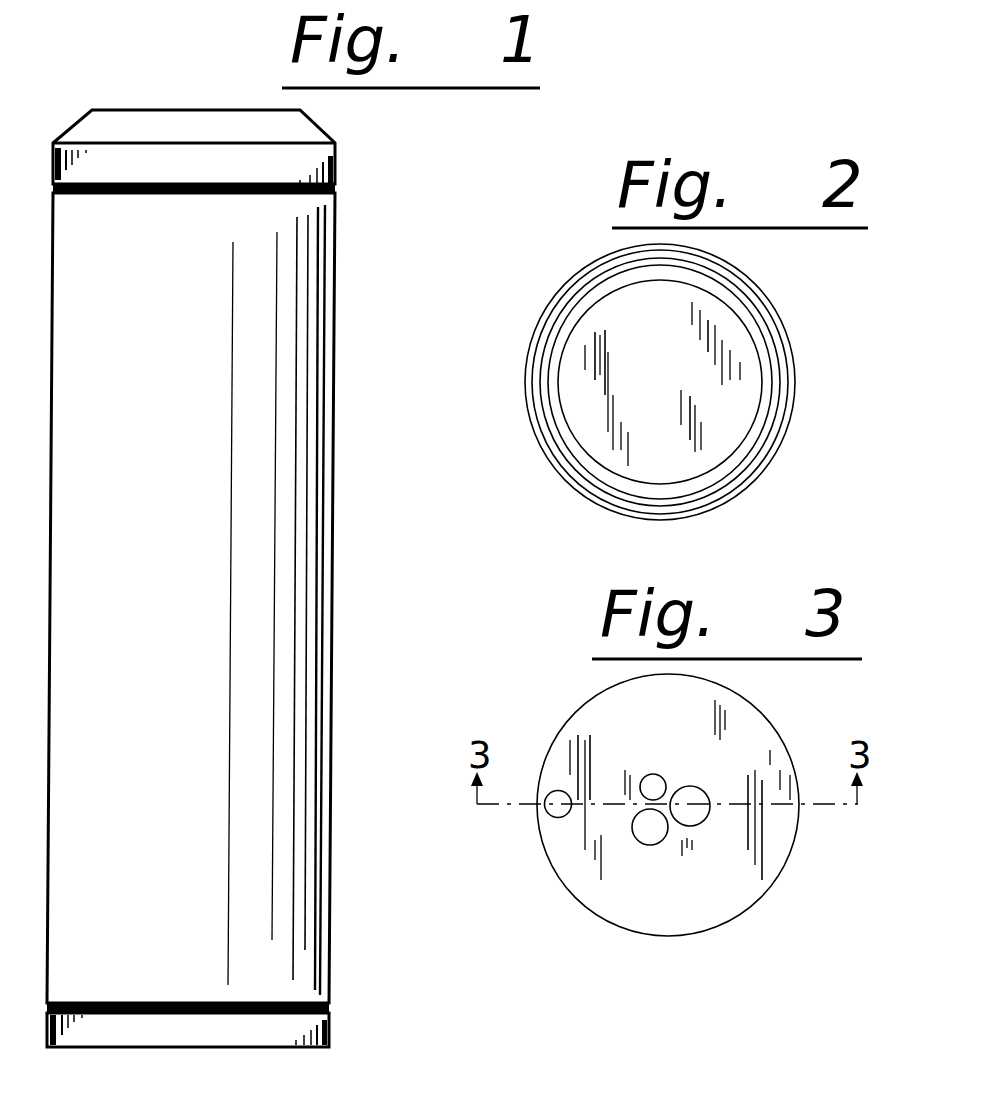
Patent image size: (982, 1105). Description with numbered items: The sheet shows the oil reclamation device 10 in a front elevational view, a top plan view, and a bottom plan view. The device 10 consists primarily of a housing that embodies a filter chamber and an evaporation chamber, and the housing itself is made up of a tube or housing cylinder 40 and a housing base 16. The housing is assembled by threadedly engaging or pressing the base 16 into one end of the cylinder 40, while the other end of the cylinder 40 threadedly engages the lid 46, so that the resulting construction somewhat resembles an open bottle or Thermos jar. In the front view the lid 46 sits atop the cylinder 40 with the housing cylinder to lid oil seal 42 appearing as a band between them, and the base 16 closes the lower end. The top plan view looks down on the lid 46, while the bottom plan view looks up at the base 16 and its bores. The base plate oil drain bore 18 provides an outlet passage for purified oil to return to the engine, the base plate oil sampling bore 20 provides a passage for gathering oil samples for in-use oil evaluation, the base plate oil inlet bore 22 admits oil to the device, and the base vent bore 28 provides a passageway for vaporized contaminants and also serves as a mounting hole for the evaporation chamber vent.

In FIG. 1, the oil reclamation device housing 10 is at (372, 452).
In FIG. 1, the housing base 16 is at (338, 1028).
In FIG. 3, the housing base 16 is at (645, 935).
In FIG. 3, the base plate oil drain bore 18 is at (690, 786).
In FIG. 3, the base plate oil sampling bore 20 is at (643, 778).
In FIG. 3, the base plate oil inlet bore 22 is at (558, 818).
In FIG. 3, the base vent bore 28 is at (650, 845).
In FIG. 1, the housing cylinder 40 is at (335, 344).
In FIG. 1, the housing cylinder to lid oil seal 42 is at (336, 193).
In FIG. 1, the lid 46 is at (336, 163).
In FIG. 2, the lid 46 is at (551, 300).